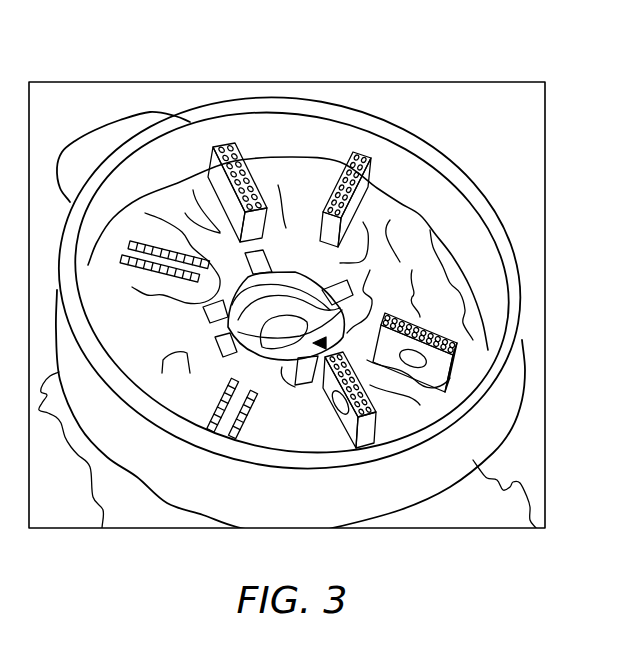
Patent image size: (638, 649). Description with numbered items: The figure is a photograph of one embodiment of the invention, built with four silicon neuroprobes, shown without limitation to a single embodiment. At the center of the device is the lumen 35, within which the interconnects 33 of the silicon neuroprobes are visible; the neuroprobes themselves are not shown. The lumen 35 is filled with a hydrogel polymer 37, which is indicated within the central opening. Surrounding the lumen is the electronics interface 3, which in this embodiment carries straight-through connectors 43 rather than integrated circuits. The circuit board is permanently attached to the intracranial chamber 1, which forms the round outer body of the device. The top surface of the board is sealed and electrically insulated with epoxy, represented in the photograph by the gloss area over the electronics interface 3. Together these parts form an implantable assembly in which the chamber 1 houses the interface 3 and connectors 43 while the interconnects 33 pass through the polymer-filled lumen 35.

The intracranial chamber 1 is at (474, 172).
The electronics interface 3 is at (137, 217).
The interconnects 33 is at (280, 300).
The lumen 35 is at (313, 312).
The hydrogel polymer 37 is at (326, 343).
The straight-through connectors 43 is at (365, 157).